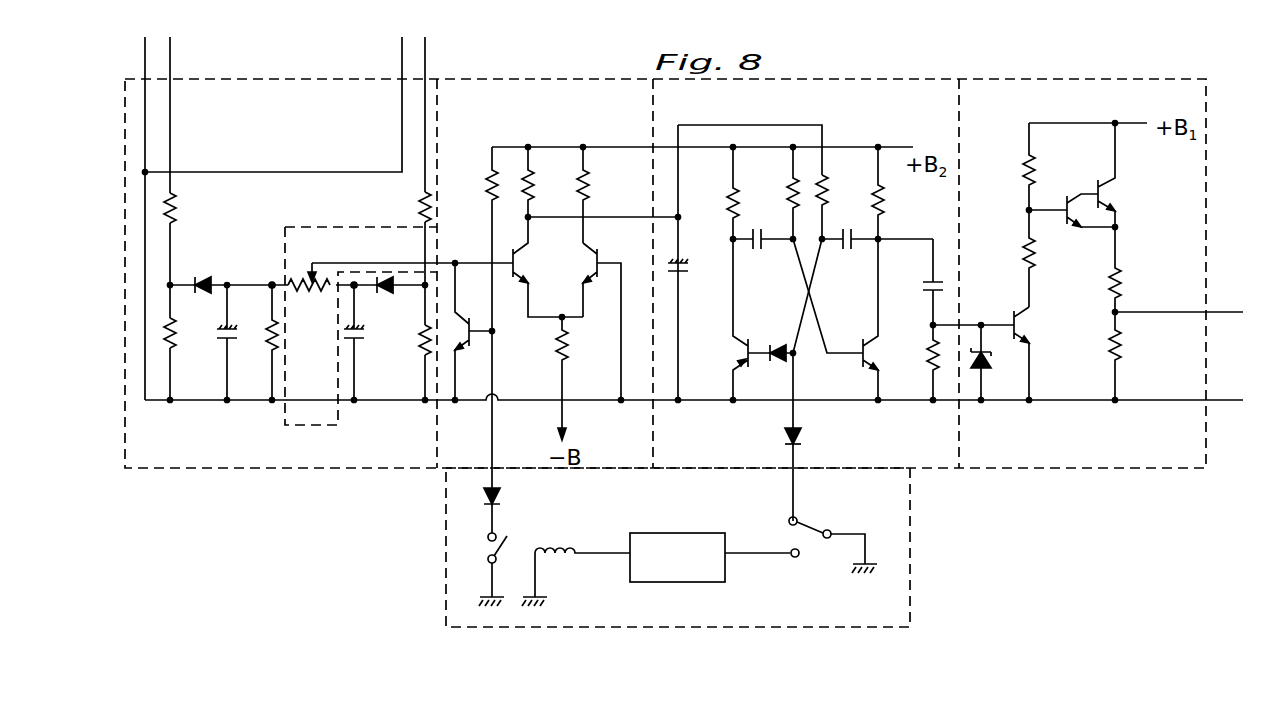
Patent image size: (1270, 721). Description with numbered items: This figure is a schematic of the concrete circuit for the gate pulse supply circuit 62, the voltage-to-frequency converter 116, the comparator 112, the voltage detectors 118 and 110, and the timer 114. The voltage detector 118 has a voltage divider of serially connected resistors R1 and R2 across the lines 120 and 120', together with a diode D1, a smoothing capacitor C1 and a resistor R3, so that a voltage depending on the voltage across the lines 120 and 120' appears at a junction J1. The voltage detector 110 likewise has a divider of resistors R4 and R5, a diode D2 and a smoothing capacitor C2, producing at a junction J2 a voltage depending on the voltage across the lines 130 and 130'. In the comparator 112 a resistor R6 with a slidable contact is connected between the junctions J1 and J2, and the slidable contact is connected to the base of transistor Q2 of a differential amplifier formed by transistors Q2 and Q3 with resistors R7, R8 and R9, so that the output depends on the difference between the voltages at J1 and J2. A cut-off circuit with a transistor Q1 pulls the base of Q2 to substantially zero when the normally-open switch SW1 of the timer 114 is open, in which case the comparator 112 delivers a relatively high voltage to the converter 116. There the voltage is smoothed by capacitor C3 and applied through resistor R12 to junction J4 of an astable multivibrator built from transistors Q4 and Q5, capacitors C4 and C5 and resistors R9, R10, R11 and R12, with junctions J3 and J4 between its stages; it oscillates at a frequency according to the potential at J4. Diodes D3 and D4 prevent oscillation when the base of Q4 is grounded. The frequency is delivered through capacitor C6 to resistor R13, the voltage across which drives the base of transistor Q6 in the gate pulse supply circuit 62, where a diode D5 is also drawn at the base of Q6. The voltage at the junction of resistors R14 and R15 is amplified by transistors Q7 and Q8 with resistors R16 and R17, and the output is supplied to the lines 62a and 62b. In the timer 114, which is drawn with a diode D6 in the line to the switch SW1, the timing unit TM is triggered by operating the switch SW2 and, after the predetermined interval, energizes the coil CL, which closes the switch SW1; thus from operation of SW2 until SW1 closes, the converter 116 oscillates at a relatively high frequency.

The voltage detector 118 is at (211, 146).
The voltage detector 110 is at (353, 146).
The comparator 112 is at (531, 144).
The voltage-to-frequency converter 116 is at (790, 122).
The gate pulse supply circuit 62 is at (1076, 119).
The timer 114 is at (652, 633).
The line 120' is at (182, 216).
The line 120 is at (193, 218).
The line 130' is at (311, 103).
The line 130 is at (449, 218).
The resistor R1 is at (176, 212).
The resistor R2 is at (176, 338).
The resistor R3 is at (270, 352).
The resistor R4 is at (414, 209).
The resistor R5 is at (420, 355).
The resistor R6 is at (486, 186).
The resistor R7 is at (534, 188).
The resistor R8 is at (589, 188).
The resistor R9 is at (726, 208).
The resistor R10 is at (884, 205).
The resistor R11 is at (789, 188).
The resistor R12 is at (828, 190).
The resistor R13 is at (927, 370).
The resistor R14 is at (1022, 250).
The resistor R15 is at (1020, 172).
The resistor R16 is at (1121, 282).
The resistor R17 is at (1121, 346).
The smoothing capacitor C1 is at (219, 325).
The capacitor C2 is at (366, 334).
The smoothing capacitor C3 is at (690, 268).
The capacitor C4 is at (763, 255).
The capacitor C5 is at (877, 254).
The capacitor C6 is at (920, 288).
The diode D1 is at (206, 268).
The diode D2 is at (388, 293).
The diode D3 is at (778, 362).
The diode D4 is at (809, 444).
The zener diode D5 is at (990, 362).
The diode D6 is at (502, 496).
The transistor Q1 is at (468, 348).
The transistor Q2 is at (520, 265).
The transistor Q3 is at (590, 268).
The transistor Q4 is at (734, 354).
The transistor Q5 is at (872, 352).
The transistor Q6 is at (1020, 326).
The transistor Q7 is at (1070, 232).
The transistor Q8 is at (1110, 196).
The junction J1 is at (272, 282).
The junction J2 is at (352, 290).
The junction J3 is at (791, 248).
The junction J4 is at (824, 248).
The normally-open switch SW1 is at (484, 550).
The switch SW2 is at (784, 522).
The coil CL is at (565, 558).
The timer unit TM is at (710, 582).
The line 62a is at (1228, 310).
The line 62b is at (1224, 394).